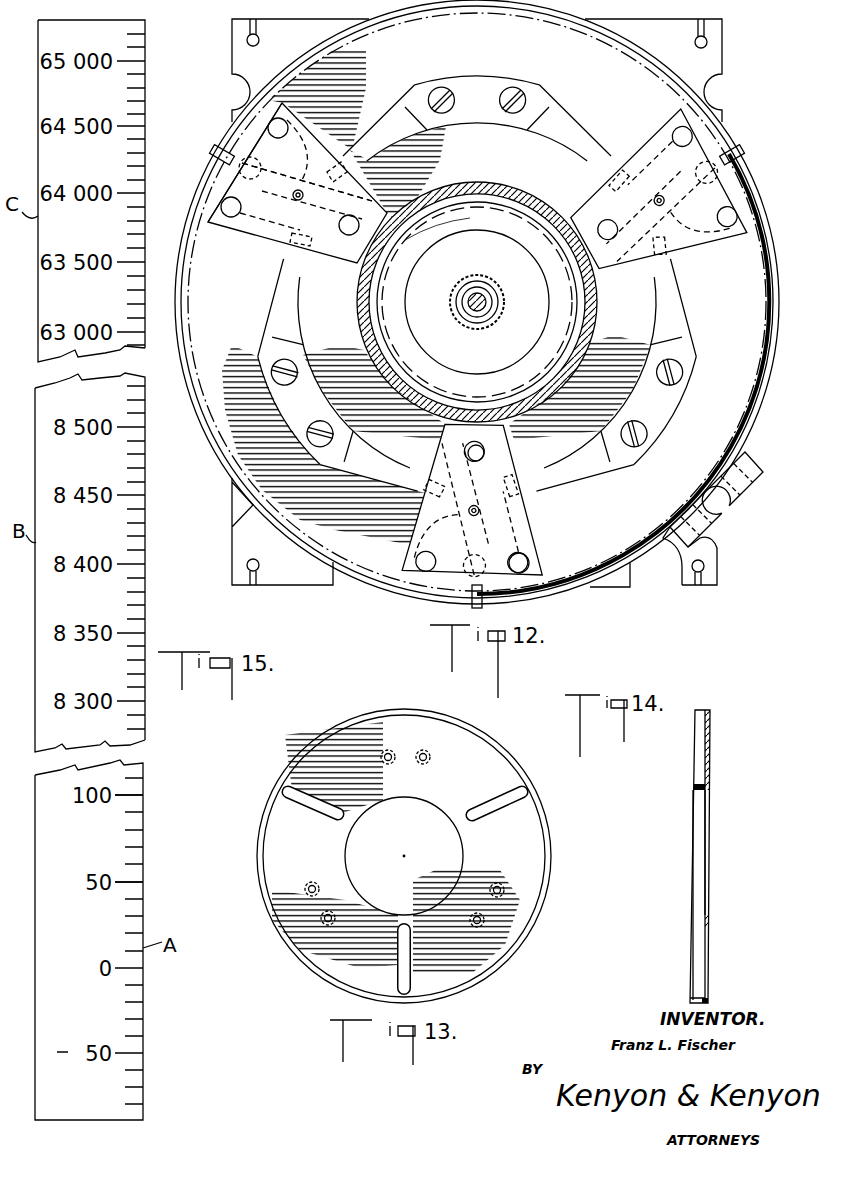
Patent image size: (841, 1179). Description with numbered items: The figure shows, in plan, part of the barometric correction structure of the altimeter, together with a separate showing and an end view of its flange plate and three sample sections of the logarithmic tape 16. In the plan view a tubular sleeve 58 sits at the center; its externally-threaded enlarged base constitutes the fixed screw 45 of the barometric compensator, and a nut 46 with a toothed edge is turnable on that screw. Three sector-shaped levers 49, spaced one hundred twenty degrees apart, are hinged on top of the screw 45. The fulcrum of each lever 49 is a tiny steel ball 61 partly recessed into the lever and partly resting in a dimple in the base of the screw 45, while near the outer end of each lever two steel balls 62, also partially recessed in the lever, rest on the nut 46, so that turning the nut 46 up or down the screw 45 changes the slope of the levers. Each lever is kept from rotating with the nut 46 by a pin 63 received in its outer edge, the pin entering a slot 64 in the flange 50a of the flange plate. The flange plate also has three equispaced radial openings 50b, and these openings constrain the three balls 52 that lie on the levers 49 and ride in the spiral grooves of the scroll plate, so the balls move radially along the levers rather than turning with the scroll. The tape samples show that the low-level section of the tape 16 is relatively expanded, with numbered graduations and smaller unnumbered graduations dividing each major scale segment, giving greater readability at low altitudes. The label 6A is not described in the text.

In FIG. 12, the screw 45 is at (568, 443).
In FIG. 12, the nut 46 is at (360, 542).
In FIG. 12, the levers 49 is at (350, 117).
In FIG. 12, the flange 50a is at (204, 227).
In FIG. 13, the flange 50a is at (313, 962).
In FIG. 14, the flange 50a is at (697, 711).
In FIG. 12, the radial openings 50b is at (272, 230).
In FIG. 13, the radial openings 50b is at (500, 805).
In FIG. 14, the radial openings 50b is at (707, 946).
In FIG. 12, the balls 52 is at (226, 127).
In FIG. 12, the tubular sleeve 58 is at (368, 339).
In FIG. 12, the steel ball 61 is at (468, 452).
In FIG. 12, the steel balls 62 is at (524, 568).
In FIG. 12, the pin 63 is at (226, 151).
In FIG. 12, the slot 64 is at (222, 177).
In FIG. 13, the slot 6A is at (284, 781).
In FIG. 15, the main scale 16 is at (152, 914).